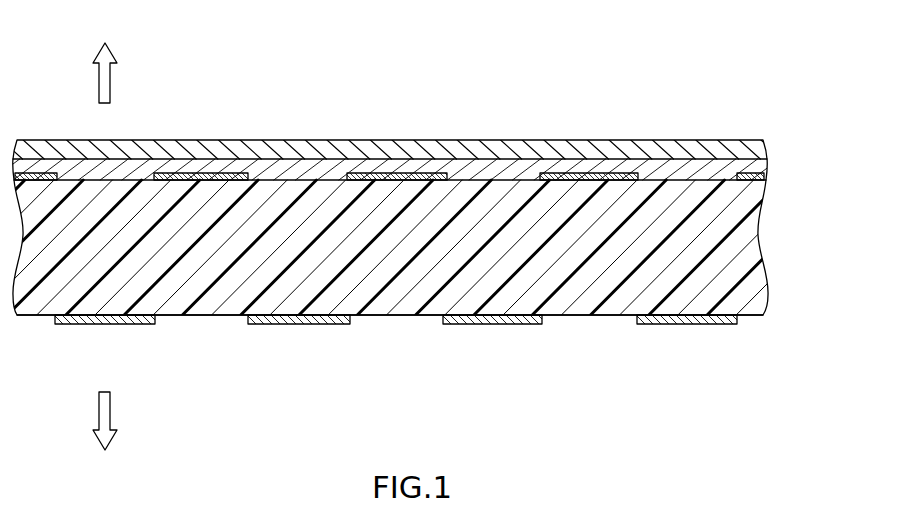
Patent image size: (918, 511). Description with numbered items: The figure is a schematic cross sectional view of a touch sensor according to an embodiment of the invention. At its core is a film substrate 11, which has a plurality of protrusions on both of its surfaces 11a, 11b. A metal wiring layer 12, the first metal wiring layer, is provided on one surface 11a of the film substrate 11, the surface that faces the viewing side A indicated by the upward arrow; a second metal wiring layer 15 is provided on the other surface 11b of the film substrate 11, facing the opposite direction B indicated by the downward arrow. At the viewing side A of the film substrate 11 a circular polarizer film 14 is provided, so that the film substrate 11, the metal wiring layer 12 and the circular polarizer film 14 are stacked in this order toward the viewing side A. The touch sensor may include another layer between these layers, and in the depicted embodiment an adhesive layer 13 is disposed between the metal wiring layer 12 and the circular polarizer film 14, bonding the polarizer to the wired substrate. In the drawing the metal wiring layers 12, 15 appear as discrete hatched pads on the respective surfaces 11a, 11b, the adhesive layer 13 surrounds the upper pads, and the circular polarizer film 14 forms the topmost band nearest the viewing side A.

The film substrate 11 is at (733, 273).
The one surface of the film substrate 11a is at (712, 160).
The another surface of the film substrate 11b is at (612, 315).
The metal wiring layer 12 is at (215, 172).
The adhesive layer 13 is at (538, 163).
The circular polarizer film 14 is at (482, 150).
The metal wiring layer 15 is at (100, 325).
The viewing side A is at (110, 82).
The downward direction B is at (110, 410).